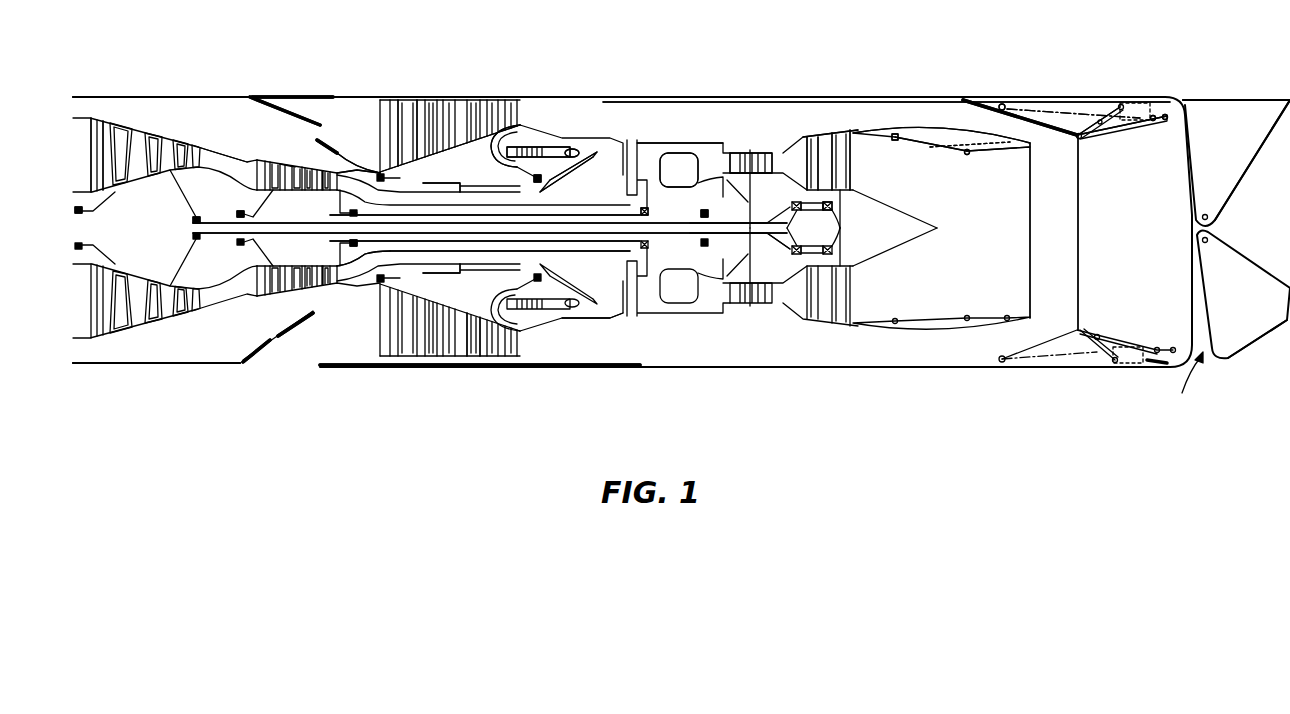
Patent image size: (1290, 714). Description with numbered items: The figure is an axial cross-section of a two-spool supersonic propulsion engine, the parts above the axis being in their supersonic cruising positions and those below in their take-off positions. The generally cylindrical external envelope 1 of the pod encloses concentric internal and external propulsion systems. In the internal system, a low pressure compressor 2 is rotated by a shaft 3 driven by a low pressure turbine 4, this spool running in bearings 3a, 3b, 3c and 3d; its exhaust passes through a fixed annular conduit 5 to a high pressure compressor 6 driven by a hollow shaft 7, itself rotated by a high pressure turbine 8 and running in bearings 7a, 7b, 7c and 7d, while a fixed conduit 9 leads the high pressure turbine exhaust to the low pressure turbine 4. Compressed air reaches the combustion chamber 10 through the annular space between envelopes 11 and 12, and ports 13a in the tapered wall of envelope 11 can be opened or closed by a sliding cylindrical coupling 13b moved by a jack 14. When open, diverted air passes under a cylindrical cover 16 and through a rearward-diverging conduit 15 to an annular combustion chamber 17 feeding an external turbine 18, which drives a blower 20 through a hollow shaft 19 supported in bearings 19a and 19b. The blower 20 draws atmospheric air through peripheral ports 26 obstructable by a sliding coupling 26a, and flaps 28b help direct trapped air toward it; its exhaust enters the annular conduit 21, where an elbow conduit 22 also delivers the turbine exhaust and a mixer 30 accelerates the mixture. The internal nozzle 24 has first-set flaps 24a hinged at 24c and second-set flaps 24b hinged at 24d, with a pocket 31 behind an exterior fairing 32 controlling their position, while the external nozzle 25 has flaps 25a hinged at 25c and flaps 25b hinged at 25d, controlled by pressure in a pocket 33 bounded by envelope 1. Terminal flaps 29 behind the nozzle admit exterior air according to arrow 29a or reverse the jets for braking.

The external envelope 1 is at (633, 97).
The low pressure compressor 2 is at (137, 133).
The shaft 3 is at (280, 223).
The bearing 3a is at (78, 213).
The bearing 3b is at (193, 218).
The bearing 3c is at (793, 246).
The bearing 3d is at (832, 211).
The low pressure turbine 4 is at (845, 163).
The fixed annular conduit 5 is at (223, 157).
The high pressure compressor 6 is at (273, 107).
The hollow shaft 7 is at (427, 215).
The bearing 7a is at (240, 212).
The bearing 7b is at (349, 244).
The bearing 7c is at (641, 212).
The bearing 7d is at (710, 213).
The high pressure turbine 8 is at (750, 153).
The fixed conduit 9 is at (795, 153).
The combustion chamber 10 is at (683, 157).
The envelope 11 is at (407, 167).
The envelope 12 is at (575, 318).
The ports 13a is at (545, 252).
The cylindrical coupling 13b is at (478, 330).
The jack 14 is at (450, 183).
The conduit diverging toward the rear 15 is at (633, 157).
The cylindrical cover 16 is at (400, 314).
The annular combustion chamber 17 is at (572, 149).
The external turbine 18 is at (537, 175).
The hollow shaft 19 is at (378, 172).
The bearing 19a is at (376, 171).
The bearing 19b is at (557, 190).
The blower 20 is at (403, 172).
The annular conduit 21 is at (778, 107).
The elbow conduit 22 is at (492, 148).
The nozzle 24 is at (985, 160).
The flaps of the first set 24a is at (943, 153).
The flaps of the second set 24b is at (1000, 153).
The hinge 24c is at (894, 133).
The hinge (neck) 24d is at (965, 156).
The nozzle 25 is at (1133, 143).
The flaps of the first set 25a is at (1055, 133).
The flaps of the second set 25b is at (1152, 121).
The hinge 25c is at (1002, 104).
The hinge 25d is at (1083, 139).
The peripheral ports 26 is at (848, 135).
The sliding coupling 26a is at (320, 95).
The flaps 28b is at (287, 165).
The flaps 29 is at (1200, 105).
The arrow 29a is at (1184, 395).
The mixer 30 is at (603, 100).
The interior cavity (pocket) 31 is at (932, 175).
The exterior fairing 32 is at (904, 126).
The pocket 33 is at (1073, 107).